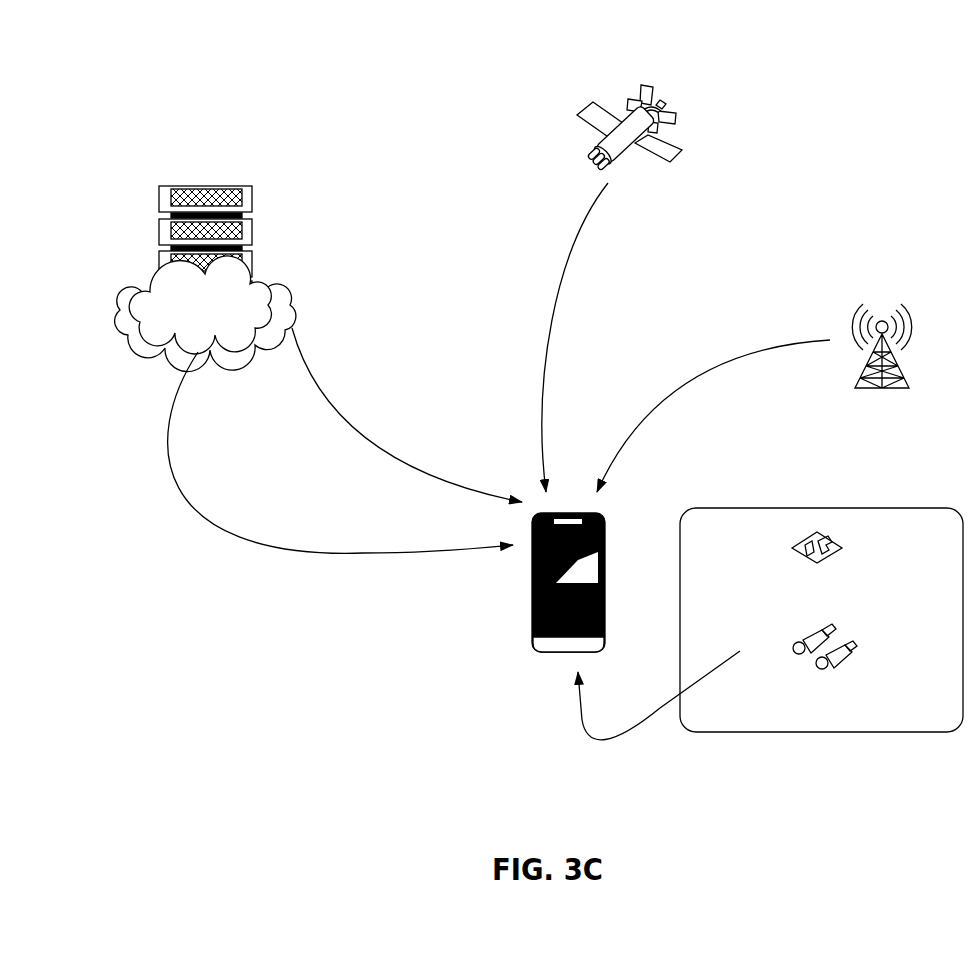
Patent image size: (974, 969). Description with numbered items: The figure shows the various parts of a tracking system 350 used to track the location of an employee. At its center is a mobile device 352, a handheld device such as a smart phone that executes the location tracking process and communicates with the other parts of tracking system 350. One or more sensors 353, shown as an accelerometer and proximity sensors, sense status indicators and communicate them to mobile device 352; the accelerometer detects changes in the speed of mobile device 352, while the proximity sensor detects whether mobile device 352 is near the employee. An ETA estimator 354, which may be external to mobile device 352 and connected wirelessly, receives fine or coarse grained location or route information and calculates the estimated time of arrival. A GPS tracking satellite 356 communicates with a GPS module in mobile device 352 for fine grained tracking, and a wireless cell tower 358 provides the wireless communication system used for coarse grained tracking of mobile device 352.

The tracking system 350 is at (802, 112).
The mobile device 352 is at (532, 622).
The sensors 353 is at (827, 507).
The ETA estimator 354 is at (238, 188).
The GPS tracking satellite 356 is at (580, 103).
The wireless cell tower 358 is at (885, 307).